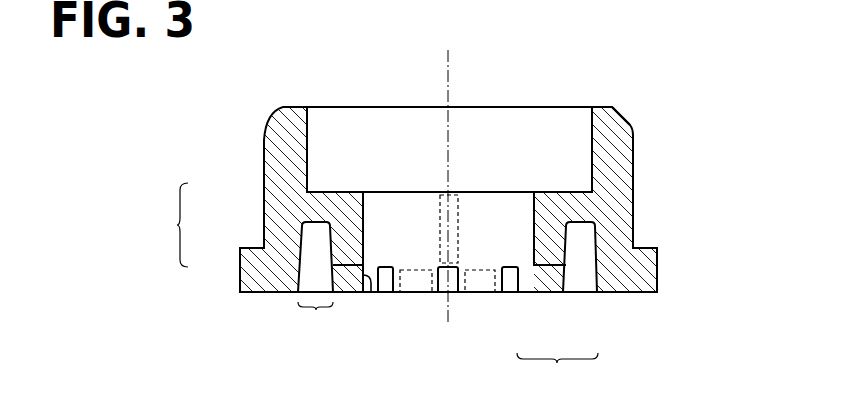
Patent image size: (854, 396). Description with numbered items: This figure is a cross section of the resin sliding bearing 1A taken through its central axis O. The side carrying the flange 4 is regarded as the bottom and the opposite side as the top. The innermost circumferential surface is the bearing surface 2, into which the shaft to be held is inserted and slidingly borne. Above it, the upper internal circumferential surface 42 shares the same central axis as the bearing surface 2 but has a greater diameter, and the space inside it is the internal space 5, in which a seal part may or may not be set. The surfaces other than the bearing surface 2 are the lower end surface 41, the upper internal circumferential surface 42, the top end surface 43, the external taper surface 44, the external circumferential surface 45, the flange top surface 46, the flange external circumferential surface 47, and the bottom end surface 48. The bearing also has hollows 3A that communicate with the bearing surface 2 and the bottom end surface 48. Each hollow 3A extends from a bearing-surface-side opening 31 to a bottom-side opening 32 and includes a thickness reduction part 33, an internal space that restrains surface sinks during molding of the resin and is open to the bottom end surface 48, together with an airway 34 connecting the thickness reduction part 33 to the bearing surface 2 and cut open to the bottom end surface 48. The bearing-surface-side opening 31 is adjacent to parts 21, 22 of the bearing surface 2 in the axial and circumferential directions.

The resin sliding bearing 1A is at (662, 47).
The bearing surface 2 is at (508, 220).
The part of the bearing surface 21 is at (458, 193).
The part of the bearing surface 22 is at (420, 288).
The bearing-surface-side opening 31 is at (385, 277).
The bottom-side opening 32 is at (320, 323).
The thickness reduction part 33 is at (310, 270).
The airway 34 is at (295, 240).
The hollow 3A is at (368, 289).
The flange 4 is at (642, 278).
The lower end surface 41 is at (548, 192).
The upper internal circumferential surface 42 is at (585, 162).
The top end surface 43 is at (601, 107).
The external taper surface 44 is at (622, 113).
The external circumferential surface 45 is at (633, 180).
The flange top surface 46 is at (647, 248).
The flange external circumferential surface 47 is at (657, 272).
The bottom end surface 48 is at (611, 294).
The internal space 5 is at (385, 120).
The central axis O is at (449, 173).